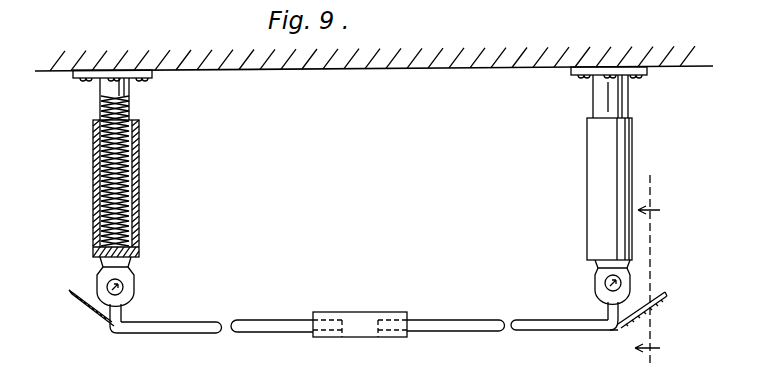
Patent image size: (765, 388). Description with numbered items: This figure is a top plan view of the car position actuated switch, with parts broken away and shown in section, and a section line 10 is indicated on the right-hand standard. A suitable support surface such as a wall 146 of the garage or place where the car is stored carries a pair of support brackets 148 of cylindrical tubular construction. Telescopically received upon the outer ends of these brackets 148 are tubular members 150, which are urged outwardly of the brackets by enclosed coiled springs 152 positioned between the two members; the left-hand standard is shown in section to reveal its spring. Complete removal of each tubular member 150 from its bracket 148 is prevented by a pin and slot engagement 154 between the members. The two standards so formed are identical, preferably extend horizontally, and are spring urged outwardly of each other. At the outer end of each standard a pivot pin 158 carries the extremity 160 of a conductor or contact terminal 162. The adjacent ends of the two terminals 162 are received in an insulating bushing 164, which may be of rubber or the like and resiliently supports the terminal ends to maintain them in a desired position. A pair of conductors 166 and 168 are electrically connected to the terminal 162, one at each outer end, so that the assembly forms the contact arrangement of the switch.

The section line 10- 10 is at (659, 269).
The wall 146 is at (219, 70).
The support bracket 148 is at (108, 92).
The tubular member 150 is at (140, 222).
The coiled spring 152 is at (100, 212).
The pin and slot engagement 154 is at (101, 180).
The pivot pin 158 is at (124, 289).
The extremity 160 is at (124, 313).
The contact terminal 162 is at (190, 322).
The insulating bushing 164 is at (369, 320).
The conductor 166 is at (74, 302).
The conductor 168 is at (658, 298).